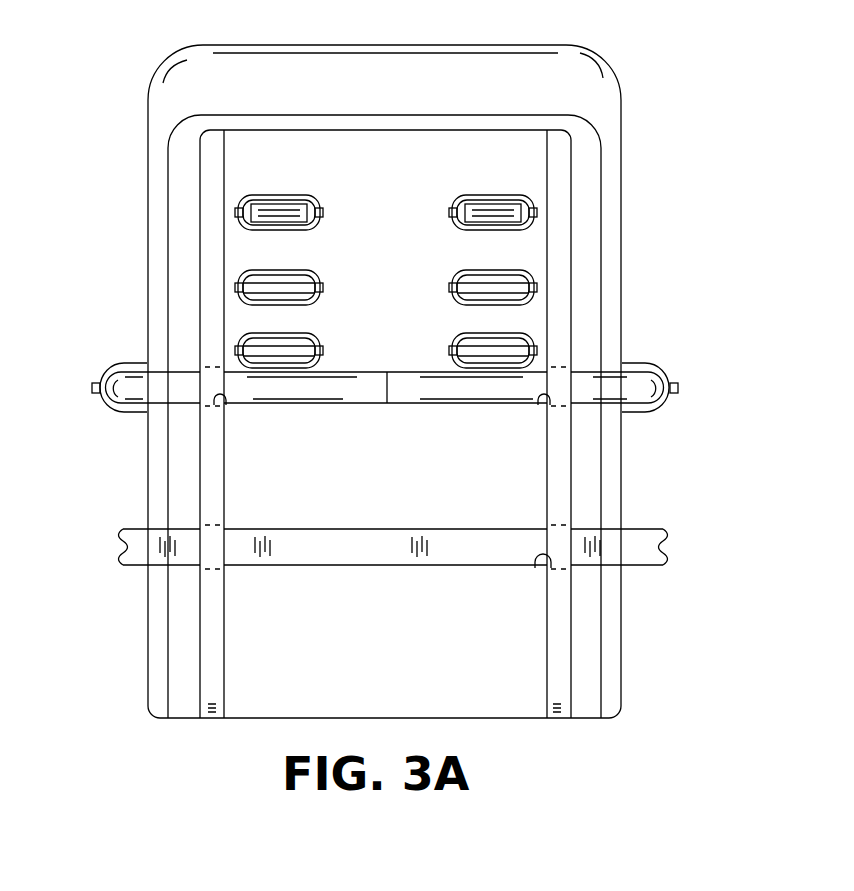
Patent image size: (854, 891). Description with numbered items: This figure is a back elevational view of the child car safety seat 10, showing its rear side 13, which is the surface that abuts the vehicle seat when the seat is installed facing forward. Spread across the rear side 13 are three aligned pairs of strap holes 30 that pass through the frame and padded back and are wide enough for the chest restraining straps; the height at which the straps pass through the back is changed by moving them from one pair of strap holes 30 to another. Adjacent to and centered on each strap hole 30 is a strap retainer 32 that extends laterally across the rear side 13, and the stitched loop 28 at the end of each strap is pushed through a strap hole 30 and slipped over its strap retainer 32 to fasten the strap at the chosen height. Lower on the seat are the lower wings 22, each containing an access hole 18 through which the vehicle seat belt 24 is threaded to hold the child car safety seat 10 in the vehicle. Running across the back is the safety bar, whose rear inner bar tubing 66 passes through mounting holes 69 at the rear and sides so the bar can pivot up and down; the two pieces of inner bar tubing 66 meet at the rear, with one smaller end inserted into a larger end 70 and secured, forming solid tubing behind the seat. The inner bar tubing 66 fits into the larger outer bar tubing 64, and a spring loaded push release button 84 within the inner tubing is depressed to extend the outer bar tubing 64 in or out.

The child car safety seat 10 is at (648, 94).
The rear side 13 is at (403, 181).
The access hole 18 is at (537, 568).
The lower wing 22 is at (225, 497).
The vehicle seat belt 24 is at (347, 553).
The loop 28 is at (290, 208).
The strap hole 30 is at (470, 340).
The strap retainer 32 is at (300, 343).
The outer bar tubing 64 is at (652, 412).
The rear inner bar tubing 66 is at (116, 365).
The mounting hole 69 is at (226, 405).
The larger end 70 is at (387, 398).
The spring loaded push release button 84 is at (92, 392).